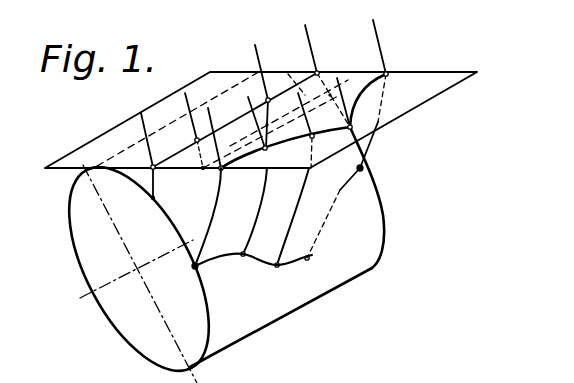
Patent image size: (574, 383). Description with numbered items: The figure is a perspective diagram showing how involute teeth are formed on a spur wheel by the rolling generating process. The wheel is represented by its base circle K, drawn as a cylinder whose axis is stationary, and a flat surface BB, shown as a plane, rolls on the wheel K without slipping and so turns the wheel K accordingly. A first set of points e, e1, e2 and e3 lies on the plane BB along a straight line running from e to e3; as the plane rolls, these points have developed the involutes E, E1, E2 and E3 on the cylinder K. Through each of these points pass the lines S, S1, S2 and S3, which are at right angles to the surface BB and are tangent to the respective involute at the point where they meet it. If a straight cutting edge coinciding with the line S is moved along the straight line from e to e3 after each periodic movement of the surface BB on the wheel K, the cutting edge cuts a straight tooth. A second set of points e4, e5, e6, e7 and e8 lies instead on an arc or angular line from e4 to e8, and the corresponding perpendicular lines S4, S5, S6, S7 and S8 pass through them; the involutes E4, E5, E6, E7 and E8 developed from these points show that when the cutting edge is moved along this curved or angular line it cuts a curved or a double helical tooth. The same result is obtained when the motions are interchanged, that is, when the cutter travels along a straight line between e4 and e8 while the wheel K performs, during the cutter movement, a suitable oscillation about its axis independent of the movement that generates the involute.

The rolling surface B is at (83, 150).
The base circle K is at (152, 365).
The line at right angles to surface BB S is at (147, 154).
The line at right angles to surface BB S1 is at (194, 126).
The line at right angles to surface BB S2 is at (264, 96).
The line at right angles to surface BB S3 is at (319, 75).
The line at right angles to surface BB S4 is at (216, 136).
The line at right angles to surface BB S5 is at (250, 120).
The line at right angles to surface BB S6 is at (299, 130).
The line at right angles to surface BB S7 is at (348, 100).
The line at right angles to surface BB S8 is at (383, 70).
The point e is at (156, 158).
The point e1 is at (190, 136).
The point e2 is at (274, 92).
The point e3 is at (323, 65).
The point e4 is at (227, 178).
The point e5 is at (274, 158).
The point e6 is at (319, 130).
The point e7 is at (359, 122).
The point e8 is at (393, 66).
The involute E is at (159, 187).
The involute E1 is at (197, 161).
The involute E2 is at (262, 120).
The involute E3 is at (328, 94).
The involute E4 is at (211, 218).
The involute E5 is at (257, 212).
The involute E6 is at (298, 217).
The involute E7 is at (354, 172).
The involute E8 is at (350, 190).